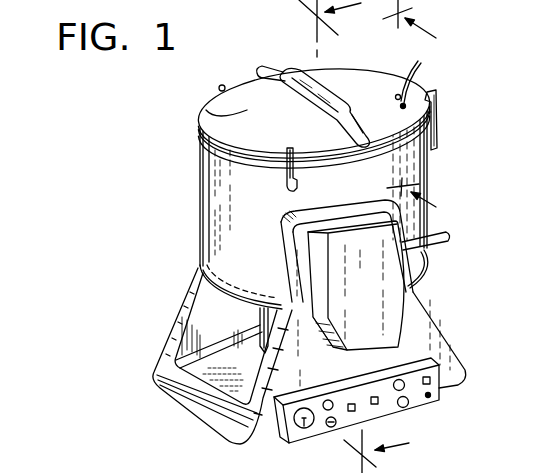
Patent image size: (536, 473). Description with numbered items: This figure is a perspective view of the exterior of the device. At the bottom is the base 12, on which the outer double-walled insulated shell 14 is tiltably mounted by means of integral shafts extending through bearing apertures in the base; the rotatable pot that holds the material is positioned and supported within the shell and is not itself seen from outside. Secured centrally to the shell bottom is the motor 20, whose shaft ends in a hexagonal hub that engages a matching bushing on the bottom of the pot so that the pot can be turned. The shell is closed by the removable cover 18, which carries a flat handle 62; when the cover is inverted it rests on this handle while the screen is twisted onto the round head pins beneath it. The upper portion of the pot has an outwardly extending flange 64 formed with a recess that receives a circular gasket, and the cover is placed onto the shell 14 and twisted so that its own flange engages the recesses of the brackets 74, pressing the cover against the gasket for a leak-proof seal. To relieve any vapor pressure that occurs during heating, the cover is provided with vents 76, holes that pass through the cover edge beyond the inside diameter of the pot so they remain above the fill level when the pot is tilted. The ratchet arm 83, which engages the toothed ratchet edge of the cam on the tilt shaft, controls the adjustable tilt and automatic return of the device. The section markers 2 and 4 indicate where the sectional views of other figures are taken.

The section line 2- 2 is at (349, 236).
The section line 4- 4 is at (419, 108).
The base 12 is at (172, 346).
The outer double-walled insulated shell 14 is at (213, 224).
The cover 18 is at (208, 100).
The motor 20 is at (262, 320).
The flat handle 62 is at (258, 76).
The flange 64 is at (200, 135).
The brackets 74 is at (437, 130).
The vents 76 is at (409, 72).
The ratchet arm 83 is at (445, 230).